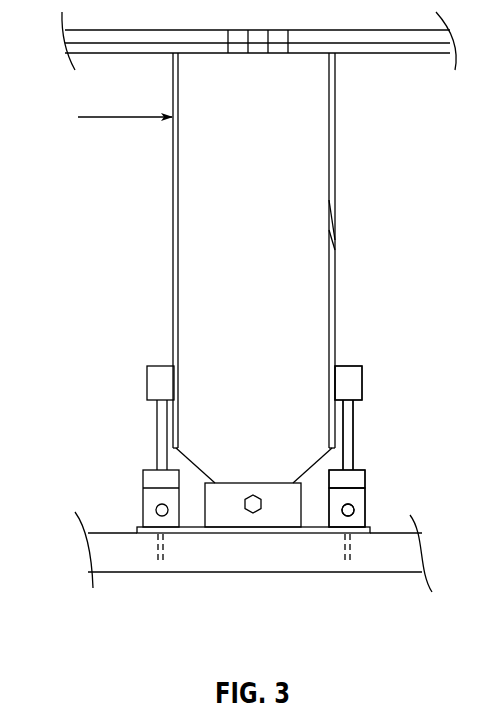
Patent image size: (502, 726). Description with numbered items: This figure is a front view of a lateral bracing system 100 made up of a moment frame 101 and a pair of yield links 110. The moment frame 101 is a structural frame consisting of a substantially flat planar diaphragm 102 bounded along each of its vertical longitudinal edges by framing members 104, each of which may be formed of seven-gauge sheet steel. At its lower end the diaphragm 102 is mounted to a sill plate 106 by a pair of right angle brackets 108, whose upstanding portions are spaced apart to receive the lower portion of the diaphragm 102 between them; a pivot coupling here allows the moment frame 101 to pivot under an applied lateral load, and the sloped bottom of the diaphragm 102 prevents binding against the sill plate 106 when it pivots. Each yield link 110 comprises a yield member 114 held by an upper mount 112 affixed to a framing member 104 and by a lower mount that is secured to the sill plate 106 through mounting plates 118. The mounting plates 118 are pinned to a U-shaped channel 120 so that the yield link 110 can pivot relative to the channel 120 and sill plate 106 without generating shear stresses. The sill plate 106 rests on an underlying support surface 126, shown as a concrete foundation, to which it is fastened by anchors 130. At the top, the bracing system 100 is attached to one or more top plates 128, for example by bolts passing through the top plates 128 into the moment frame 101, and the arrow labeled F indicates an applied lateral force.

The lateral bracing system 100 is at (118, 277).
The moment frame 101 is at (347, 208).
The diaphragm 102 is at (254, 268).
The framing member 104 is at (335, 238).
The sill plate 106 is at (297, 534).
The right angle bracket 108 is at (227, 515).
The yield link 110 is at (128, 440).
The upper mount 112 is at (362, 380).
The yield member 114 is at (353, 417).
The mounting plate 118 is at (365, 475).
The U-shaped channel 120 is at (367, 500).
The underlying support surface 126 is at (103, 563).
The top plate 128 is at (373, 33).
The anchor 130 is at (155, 550).